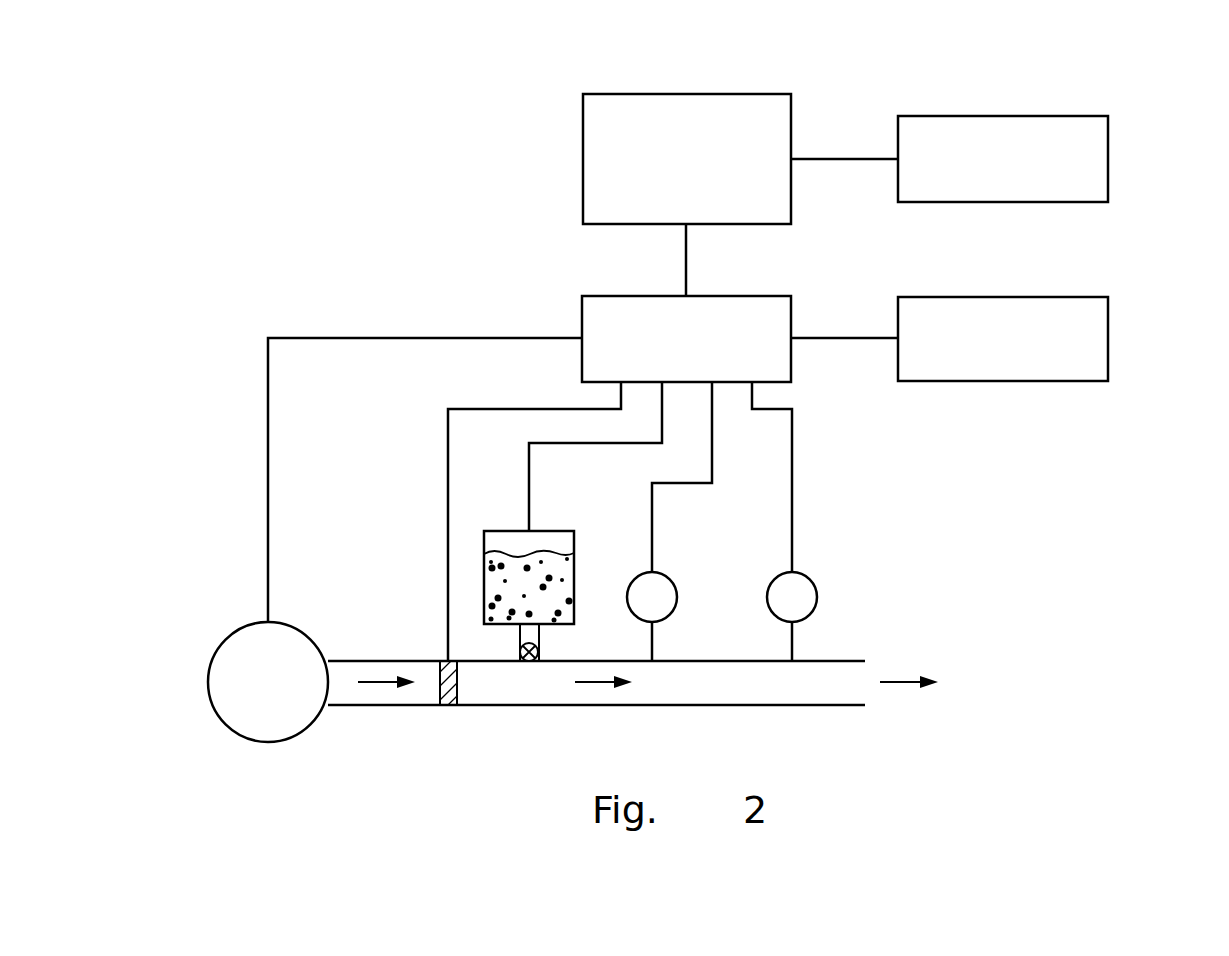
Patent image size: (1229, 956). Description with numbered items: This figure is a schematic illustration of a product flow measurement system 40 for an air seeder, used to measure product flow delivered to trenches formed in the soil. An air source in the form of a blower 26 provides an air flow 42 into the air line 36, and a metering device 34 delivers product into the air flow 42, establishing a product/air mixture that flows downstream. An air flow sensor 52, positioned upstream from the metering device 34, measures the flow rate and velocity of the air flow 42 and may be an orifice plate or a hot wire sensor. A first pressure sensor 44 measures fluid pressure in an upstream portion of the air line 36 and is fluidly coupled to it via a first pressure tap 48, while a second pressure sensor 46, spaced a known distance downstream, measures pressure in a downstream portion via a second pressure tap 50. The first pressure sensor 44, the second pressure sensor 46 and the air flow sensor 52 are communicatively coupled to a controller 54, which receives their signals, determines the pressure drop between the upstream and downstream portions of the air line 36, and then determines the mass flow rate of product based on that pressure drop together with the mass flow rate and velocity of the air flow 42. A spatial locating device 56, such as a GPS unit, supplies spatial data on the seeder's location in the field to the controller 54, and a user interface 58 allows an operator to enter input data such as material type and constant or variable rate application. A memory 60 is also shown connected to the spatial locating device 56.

The blower 26 is at (225, 645).
The metering device 34 is at (574, 562).
The air line 36 is at (404, 705).
The product flow measurement system 40 is at (305, 128).
The air flow 42 is at (378, 680).
The first pressure sensor 44 is at (671, 580).
The second pressure sensor 46 is at (811, 580).
The first pressure tap 48 is at (655, 660).
The second pressure tap 50 is at (795, 660).
The air flow sensor 52 is at (457, 688).
The controller 54 is at (591, 296).
The spatial locating device 56 is at (727, 94).
The user interface 58 is at (1108, 337).
The memory 60 is at (1014, 116).